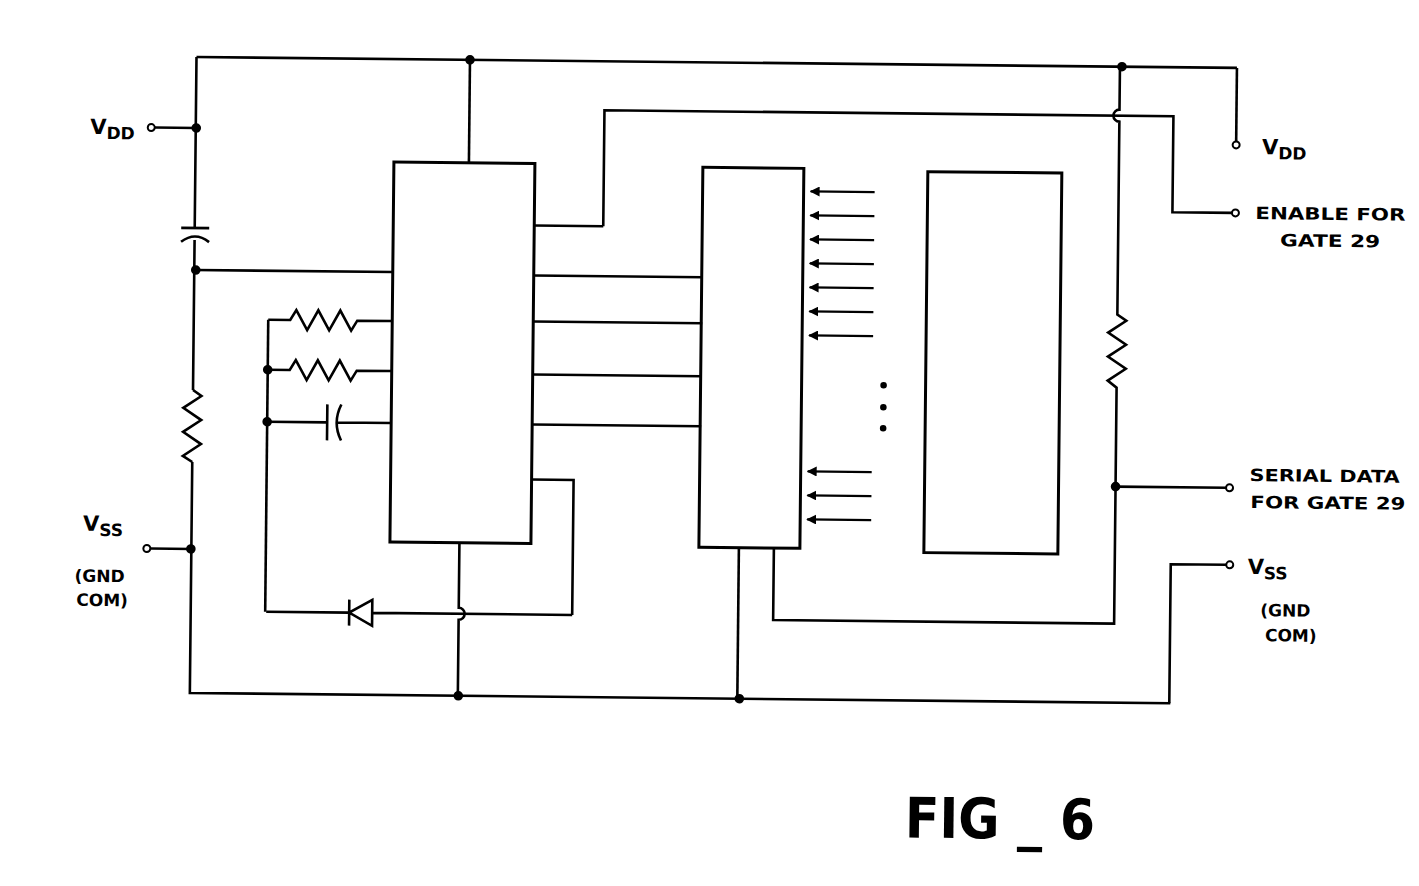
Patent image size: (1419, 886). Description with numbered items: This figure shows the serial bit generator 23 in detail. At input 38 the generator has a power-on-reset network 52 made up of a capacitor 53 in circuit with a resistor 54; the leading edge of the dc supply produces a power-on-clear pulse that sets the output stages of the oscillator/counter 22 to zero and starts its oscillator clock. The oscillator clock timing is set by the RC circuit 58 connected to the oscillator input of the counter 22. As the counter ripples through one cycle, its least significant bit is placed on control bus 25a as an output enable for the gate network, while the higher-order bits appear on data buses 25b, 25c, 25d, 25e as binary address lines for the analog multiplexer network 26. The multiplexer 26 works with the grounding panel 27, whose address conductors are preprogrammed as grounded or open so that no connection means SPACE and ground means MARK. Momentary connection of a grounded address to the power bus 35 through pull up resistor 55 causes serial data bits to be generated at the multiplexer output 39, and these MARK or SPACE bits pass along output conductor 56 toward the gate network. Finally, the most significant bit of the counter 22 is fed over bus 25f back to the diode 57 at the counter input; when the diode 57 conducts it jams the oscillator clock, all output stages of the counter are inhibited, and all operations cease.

The oscillator/counter 22 is at (471, 529).
The serial bit generator 23 is at (958, 34).
The control bus 25a is at (607, 104).
The data bus 25b is at (666, 425).
The data bus 25c is at (654, 372).
The data bus 25d is at (586, 321).
The data bus 25e is at (567, 261).
The bus 25f is at (580, 491).
The analog multiplexer network 26 is at (727, 545).
The grounding panel 27 is at (1053, 163).
The power bus 35 is at (427, 55).
The input 38 is at (327, 269).
The output 39 is at (1121, 583).
The power-on-reset network 52 is at (169, 365).
The capacitor 53 is at (185, 228).
The resistor 54 is at (186, 450).
The pull up resistor 55 is at (1128, 290).
The output conductor 56 is at (1165, 478).
The diode 57 is at (364, 618).
The RC circuit 58 is at (262, 437).